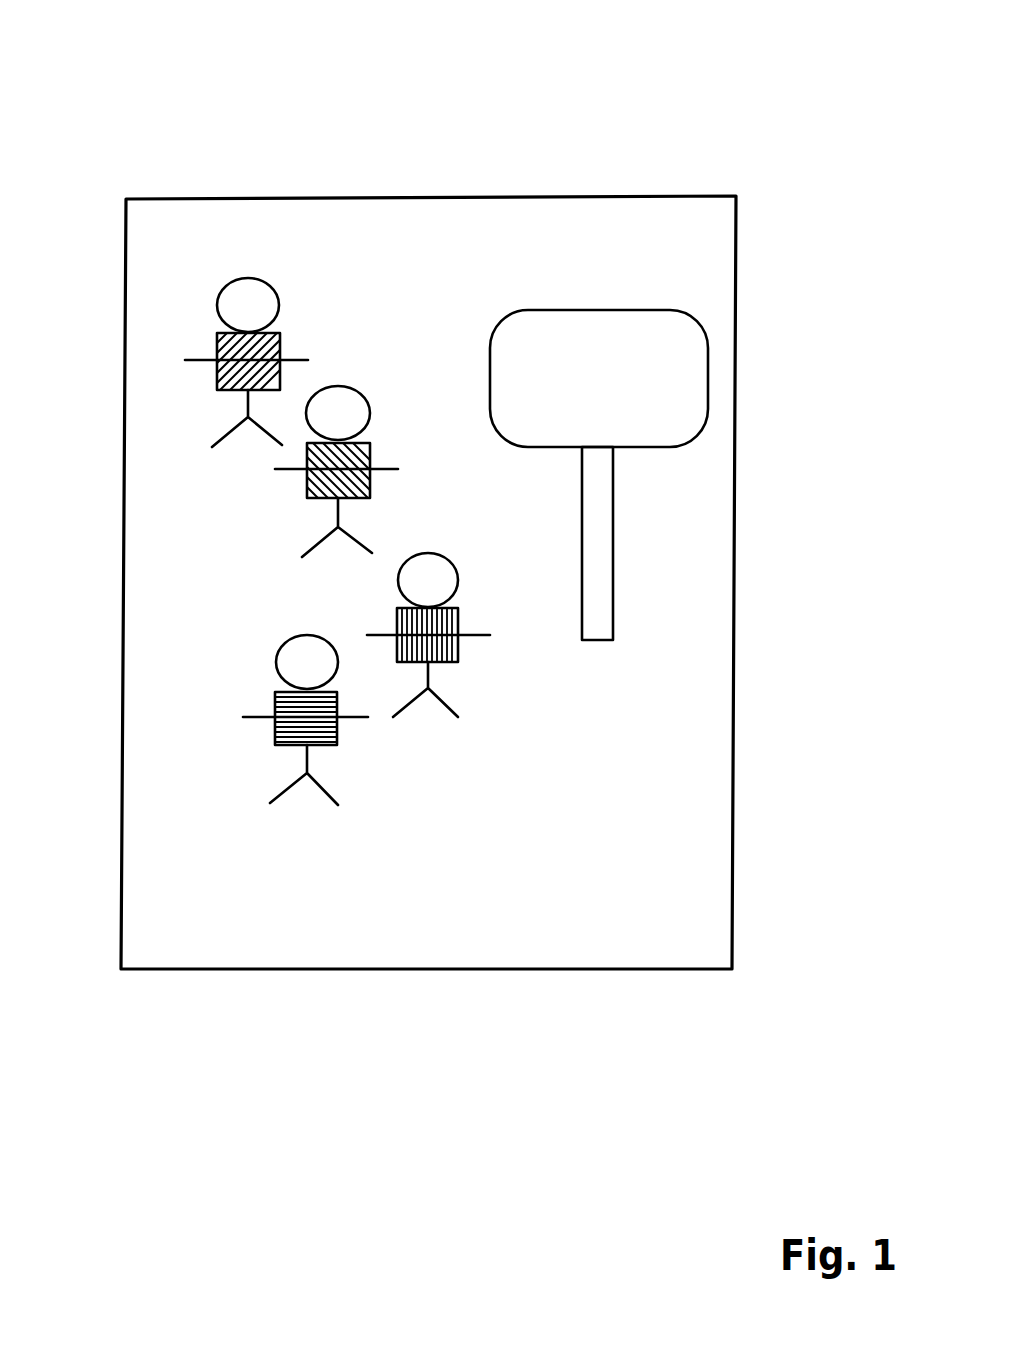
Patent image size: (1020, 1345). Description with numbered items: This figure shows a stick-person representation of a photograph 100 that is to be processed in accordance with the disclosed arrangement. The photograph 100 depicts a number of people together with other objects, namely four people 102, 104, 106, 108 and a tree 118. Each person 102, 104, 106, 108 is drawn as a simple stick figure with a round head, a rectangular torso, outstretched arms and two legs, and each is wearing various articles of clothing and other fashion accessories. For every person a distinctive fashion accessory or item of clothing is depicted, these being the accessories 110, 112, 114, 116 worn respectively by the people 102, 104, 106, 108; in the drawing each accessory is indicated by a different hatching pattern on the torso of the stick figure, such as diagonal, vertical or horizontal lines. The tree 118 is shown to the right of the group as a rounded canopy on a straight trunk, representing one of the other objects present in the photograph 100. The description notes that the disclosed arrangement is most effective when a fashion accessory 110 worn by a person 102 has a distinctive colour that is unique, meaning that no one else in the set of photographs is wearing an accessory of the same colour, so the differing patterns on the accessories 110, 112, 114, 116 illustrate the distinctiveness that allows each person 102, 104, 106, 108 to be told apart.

The photograph 100 is at (686, 78).
The person 102 is at (248, 278).
The person 104 is at (338, 386).
The person 106 is at (428, 553).
The person 108 is at (307, 635).
The fashion accessory 110 is at (232, 372).
The fashion accessory 112 is at (312, 487).
The fashion accessory 114 is at (452, 650).
The fashion accessory 116 is at (280, 735).
The tree 118 is at (615, 337).